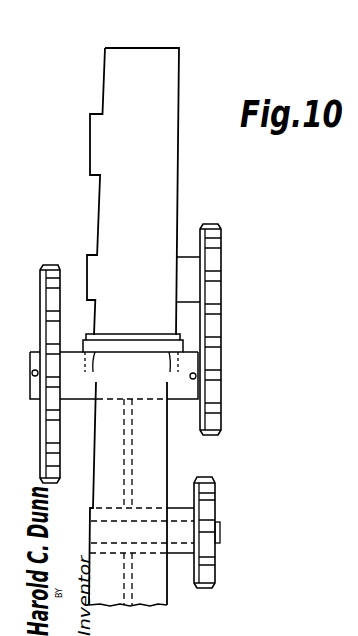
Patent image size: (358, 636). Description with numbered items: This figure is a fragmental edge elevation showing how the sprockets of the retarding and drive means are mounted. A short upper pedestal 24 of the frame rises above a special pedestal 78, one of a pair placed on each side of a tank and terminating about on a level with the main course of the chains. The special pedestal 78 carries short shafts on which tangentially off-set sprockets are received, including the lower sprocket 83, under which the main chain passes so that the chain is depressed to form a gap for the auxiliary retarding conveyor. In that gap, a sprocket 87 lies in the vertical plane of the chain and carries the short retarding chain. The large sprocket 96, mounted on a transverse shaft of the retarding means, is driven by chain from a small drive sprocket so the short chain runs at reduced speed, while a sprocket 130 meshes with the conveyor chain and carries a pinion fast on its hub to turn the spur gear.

The upper pedestal 24 is at (173, 203).
The sprocket 130 is at (220, 246).
The sprocket 87 is at (207, 401).
The large sprocket 96 is at (43, 415).
The special pedestal 78 is at (166, 460).
The lower sprocket 83 is at (210, 565).